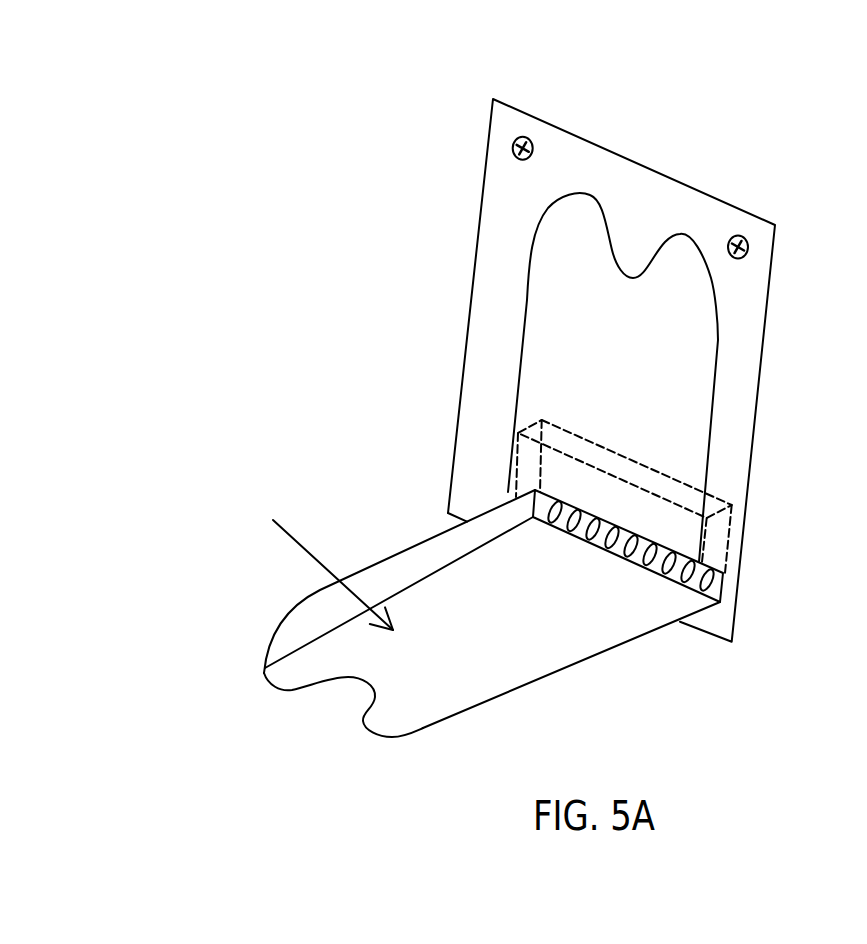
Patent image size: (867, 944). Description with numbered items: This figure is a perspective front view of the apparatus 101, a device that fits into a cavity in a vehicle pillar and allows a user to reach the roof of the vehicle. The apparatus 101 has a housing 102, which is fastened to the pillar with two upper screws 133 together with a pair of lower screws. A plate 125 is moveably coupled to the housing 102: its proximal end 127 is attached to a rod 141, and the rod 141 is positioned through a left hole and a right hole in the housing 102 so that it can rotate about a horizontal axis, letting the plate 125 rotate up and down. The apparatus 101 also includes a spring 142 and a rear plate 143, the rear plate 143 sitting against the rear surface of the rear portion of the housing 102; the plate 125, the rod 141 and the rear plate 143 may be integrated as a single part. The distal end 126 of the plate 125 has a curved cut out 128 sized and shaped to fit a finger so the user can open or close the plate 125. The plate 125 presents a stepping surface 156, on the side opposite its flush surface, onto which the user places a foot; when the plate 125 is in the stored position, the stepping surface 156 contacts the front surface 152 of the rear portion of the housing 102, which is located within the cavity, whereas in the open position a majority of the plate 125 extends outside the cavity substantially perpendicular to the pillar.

The apparatus 101 is at (520, 420).
The housing 102 is at (703, 153).
The plate 125 is at (464, 630).
The distal end 126 is at (420, 712).
The proximal end 127 is at (563, 557).
The curved cut out 128 is at (303, 717).
The upper screws 133 is at (529, 138).
The rod 141 is at (683, 533).
The spring 142 is at (648, 547).
The rear plate 143 is at (606, 446).
The front surface 152 is at (585, 322).
The stepping surface 156 is at (324, 561).